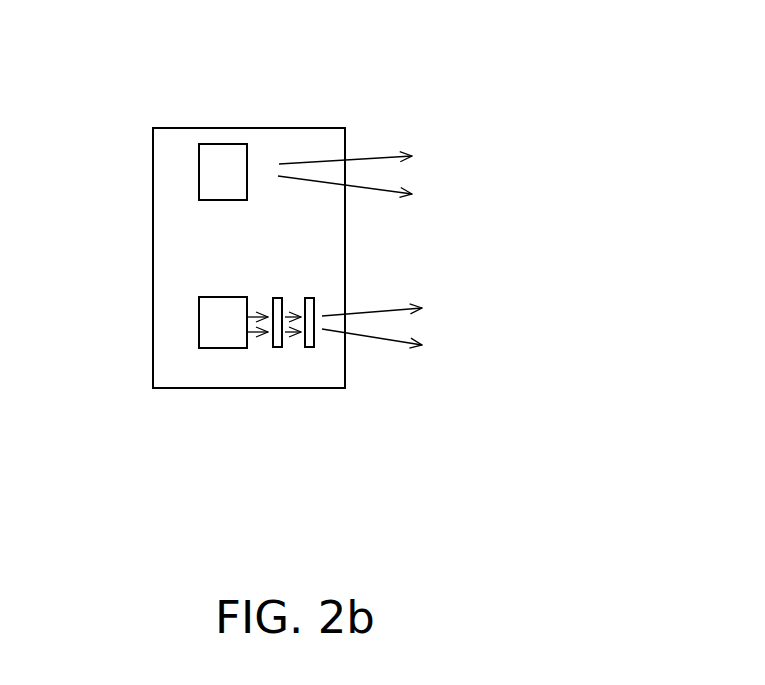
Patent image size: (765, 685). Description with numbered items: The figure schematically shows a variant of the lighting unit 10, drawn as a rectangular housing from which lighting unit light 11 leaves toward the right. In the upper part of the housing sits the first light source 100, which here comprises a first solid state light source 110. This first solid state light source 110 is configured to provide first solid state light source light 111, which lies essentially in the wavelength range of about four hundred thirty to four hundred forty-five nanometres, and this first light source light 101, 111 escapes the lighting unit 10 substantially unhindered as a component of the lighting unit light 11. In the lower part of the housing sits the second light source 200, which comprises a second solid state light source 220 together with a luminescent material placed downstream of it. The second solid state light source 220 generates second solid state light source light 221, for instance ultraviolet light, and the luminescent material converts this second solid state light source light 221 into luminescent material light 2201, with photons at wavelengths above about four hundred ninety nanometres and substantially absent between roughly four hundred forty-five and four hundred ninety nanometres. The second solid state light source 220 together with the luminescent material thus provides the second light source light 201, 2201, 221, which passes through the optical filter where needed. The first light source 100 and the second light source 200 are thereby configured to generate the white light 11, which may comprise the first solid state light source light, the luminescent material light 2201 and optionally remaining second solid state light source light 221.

The lighting unit 10 is at (279, 110).
The lighting unit light 11 is at (478, 128).
The first light source 100 is at (155, 121).
The first solid state light source 110 is at (215, 136).
The first light source light 101 is at (364, 126).
The first solid state light source light 111 is at (318, 150).
The second light source 200 is at (178, 326).
The second light source light 201 is at (260, 323).
The second solid state light source light 221 is at (380, 330).
The luminescent material light 2201 is at (290, 323).
The second solid state light source 220 is at (313, 365).